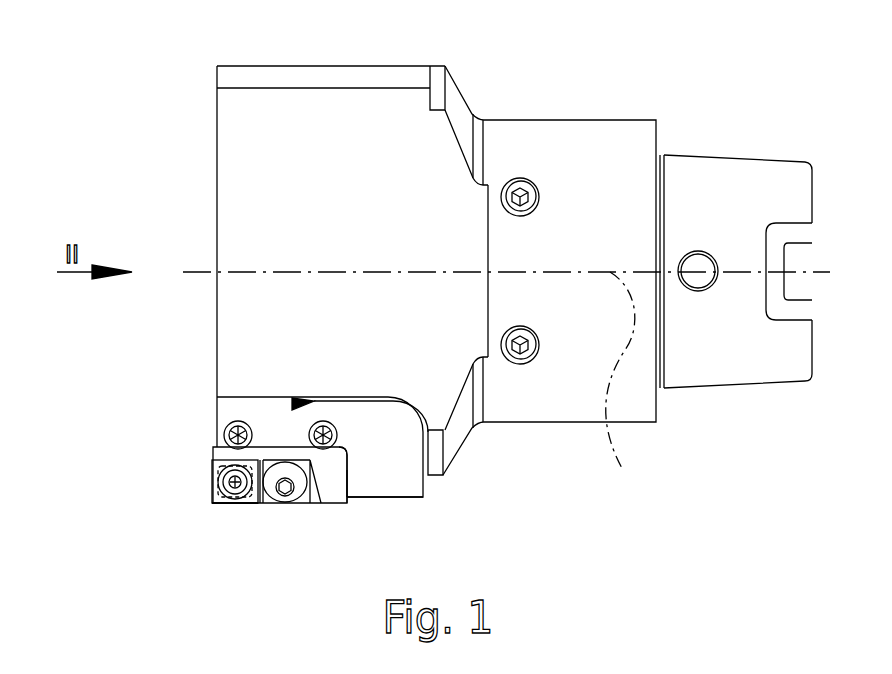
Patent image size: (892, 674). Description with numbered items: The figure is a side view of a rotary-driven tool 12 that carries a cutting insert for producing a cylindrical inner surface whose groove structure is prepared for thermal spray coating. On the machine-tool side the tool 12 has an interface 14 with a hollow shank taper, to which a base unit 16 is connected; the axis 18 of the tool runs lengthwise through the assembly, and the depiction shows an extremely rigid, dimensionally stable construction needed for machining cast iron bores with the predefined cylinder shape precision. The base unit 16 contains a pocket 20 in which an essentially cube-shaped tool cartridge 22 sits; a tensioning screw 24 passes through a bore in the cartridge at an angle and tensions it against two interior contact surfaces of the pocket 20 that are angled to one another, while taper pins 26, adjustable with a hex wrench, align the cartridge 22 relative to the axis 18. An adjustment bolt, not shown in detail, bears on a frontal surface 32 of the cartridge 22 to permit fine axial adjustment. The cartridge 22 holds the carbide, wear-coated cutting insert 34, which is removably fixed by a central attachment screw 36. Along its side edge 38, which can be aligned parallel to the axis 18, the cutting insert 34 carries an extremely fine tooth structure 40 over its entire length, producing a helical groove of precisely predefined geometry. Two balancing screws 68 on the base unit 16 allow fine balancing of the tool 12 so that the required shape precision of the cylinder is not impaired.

The tool 12 is at (583, 108).
The interface 14 is at (725, 178).
The base unit 16 is at (632, 119).
The axis 18 is at (627, 384).
The pocket 20 is at (290, 450).
The tool cartridge 22 is at (340, 455).
The tensioning screw 24 is at (287, 503).
The taper pins 26 is at (226, 433).
The frontal surface 32 is at (350, 483).
The cutting insert 34 is at (213, 480).
The central attachment screw 36 is at (223, 472).
The side edge 38 is at (220, 505).
The fine tooth structure 40 is at (244, 516).
The balancing screws 68 is at (518, 190).